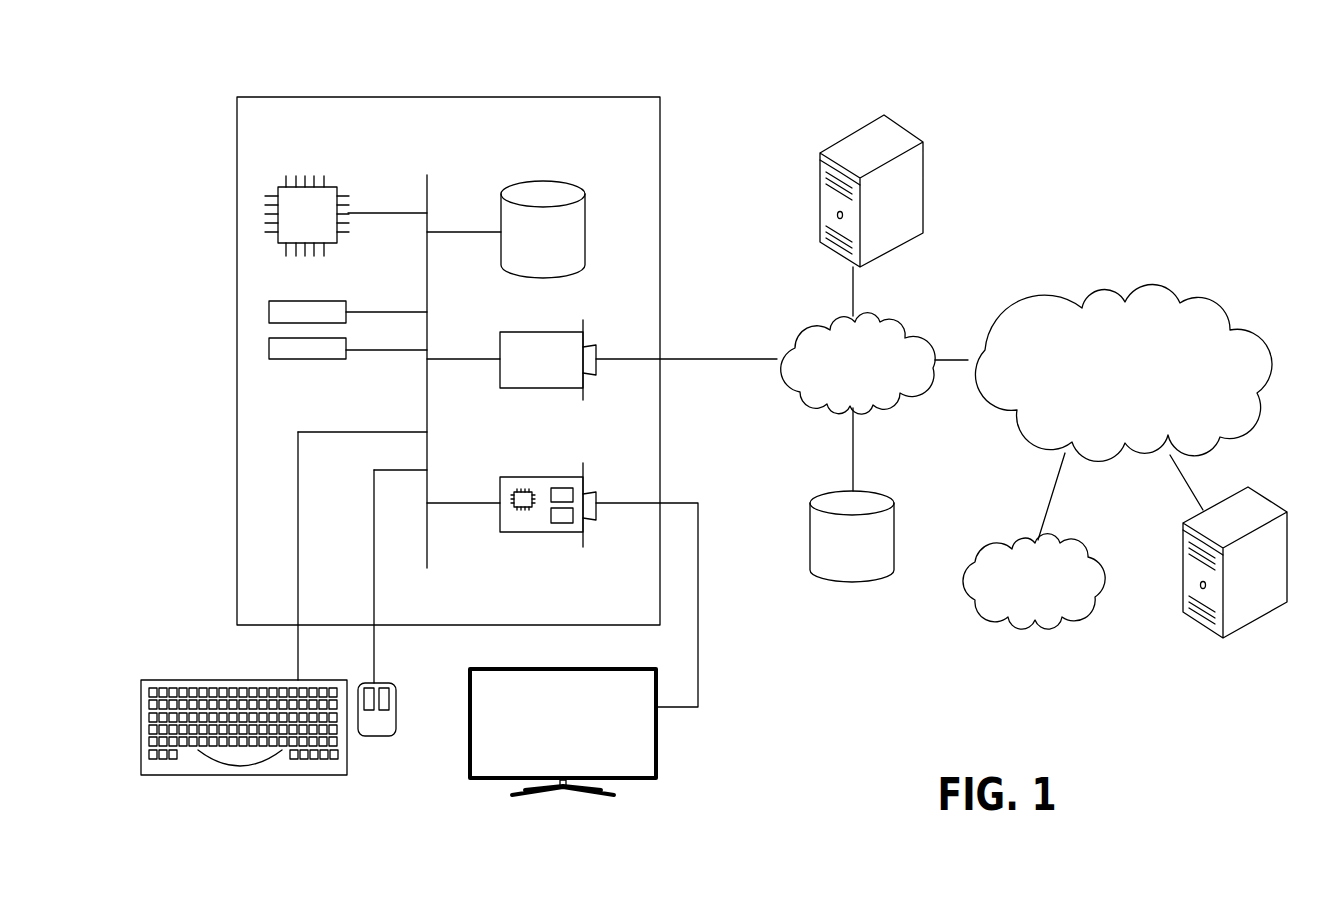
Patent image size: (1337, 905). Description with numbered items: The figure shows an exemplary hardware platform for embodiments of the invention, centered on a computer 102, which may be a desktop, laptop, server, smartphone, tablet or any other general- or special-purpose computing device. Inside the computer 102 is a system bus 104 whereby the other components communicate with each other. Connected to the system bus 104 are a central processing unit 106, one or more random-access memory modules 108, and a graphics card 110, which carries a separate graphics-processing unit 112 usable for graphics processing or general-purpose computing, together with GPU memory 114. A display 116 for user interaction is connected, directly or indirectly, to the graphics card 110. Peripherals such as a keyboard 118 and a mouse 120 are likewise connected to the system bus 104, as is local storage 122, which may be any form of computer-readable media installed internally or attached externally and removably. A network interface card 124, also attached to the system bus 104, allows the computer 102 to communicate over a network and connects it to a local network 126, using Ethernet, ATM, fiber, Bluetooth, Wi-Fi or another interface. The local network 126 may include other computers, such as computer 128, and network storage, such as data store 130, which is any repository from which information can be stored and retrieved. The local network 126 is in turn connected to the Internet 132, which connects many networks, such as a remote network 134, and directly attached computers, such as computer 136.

The computer 102 is at (612, 97).
The system bus 104 is at (430, 185).
The central processing unit 106 is at (331, 181).
The random-access memory modules 108 is at (347, 350).
The graphics card 110 is at (575, 569).
The graphics-processing unit 112 is at (522, 508).
The GPU memory 114 is at (558, 524).
The display 116 is at (658, 761).
The keyboard 118 is at (245, 776).
The mouse 120 is at (373, 737).
The local storage 122 is at (585, 215).
The network interface card 124 is at (500, 340).
The local network 126 is at (905, 319).
The computer 128 is at (905, 131).
The data store 130 is at (886, 491).
The Internet 132 is at (1170, 284).
The remote network 134 is at (1090, 539).
The computer 136 is at (1265, 497).